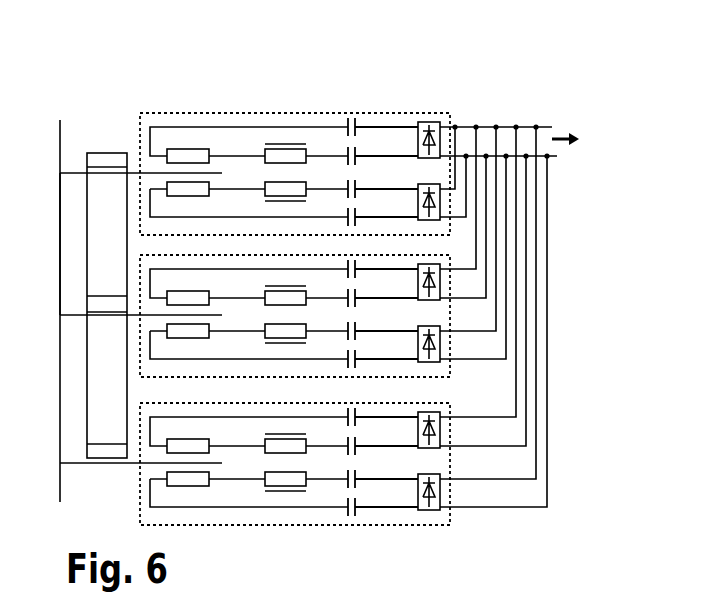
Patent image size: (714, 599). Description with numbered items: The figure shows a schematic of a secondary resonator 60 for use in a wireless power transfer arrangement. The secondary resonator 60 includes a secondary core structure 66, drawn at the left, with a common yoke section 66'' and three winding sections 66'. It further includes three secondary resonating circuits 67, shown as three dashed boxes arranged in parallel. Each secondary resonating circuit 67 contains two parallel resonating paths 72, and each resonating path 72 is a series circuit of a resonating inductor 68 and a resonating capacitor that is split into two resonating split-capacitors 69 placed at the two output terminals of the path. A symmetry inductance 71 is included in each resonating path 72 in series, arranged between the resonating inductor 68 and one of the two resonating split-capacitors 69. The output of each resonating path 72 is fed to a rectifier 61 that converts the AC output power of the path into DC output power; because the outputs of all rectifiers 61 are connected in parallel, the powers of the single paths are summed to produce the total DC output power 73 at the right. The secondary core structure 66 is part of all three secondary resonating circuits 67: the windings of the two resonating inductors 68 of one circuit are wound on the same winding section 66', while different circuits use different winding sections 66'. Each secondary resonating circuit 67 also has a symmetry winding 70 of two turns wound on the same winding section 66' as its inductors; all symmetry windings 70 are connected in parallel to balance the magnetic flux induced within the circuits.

The secondary resonator 60 is at (518, 50).
The rectifier 61 is at (430, 97).
The secondary core structure 66 is at (49, 273).
The winding section 66' is at (120, 294).
The common yoke section 66'' is at (32, 244).
The secondary resonating circuit 67 is at (452, 236).
The resonating inductor 68 is at (190, 97).
The resonating split-capacitor 69 is at (351, 97).
The symmetry winding 70 is at (118, 158).
The symmetry inductance 71 is at (285, 97).
The resonating path 72 is at (209, 320).
The total DC output power 73 is at (572, 123).